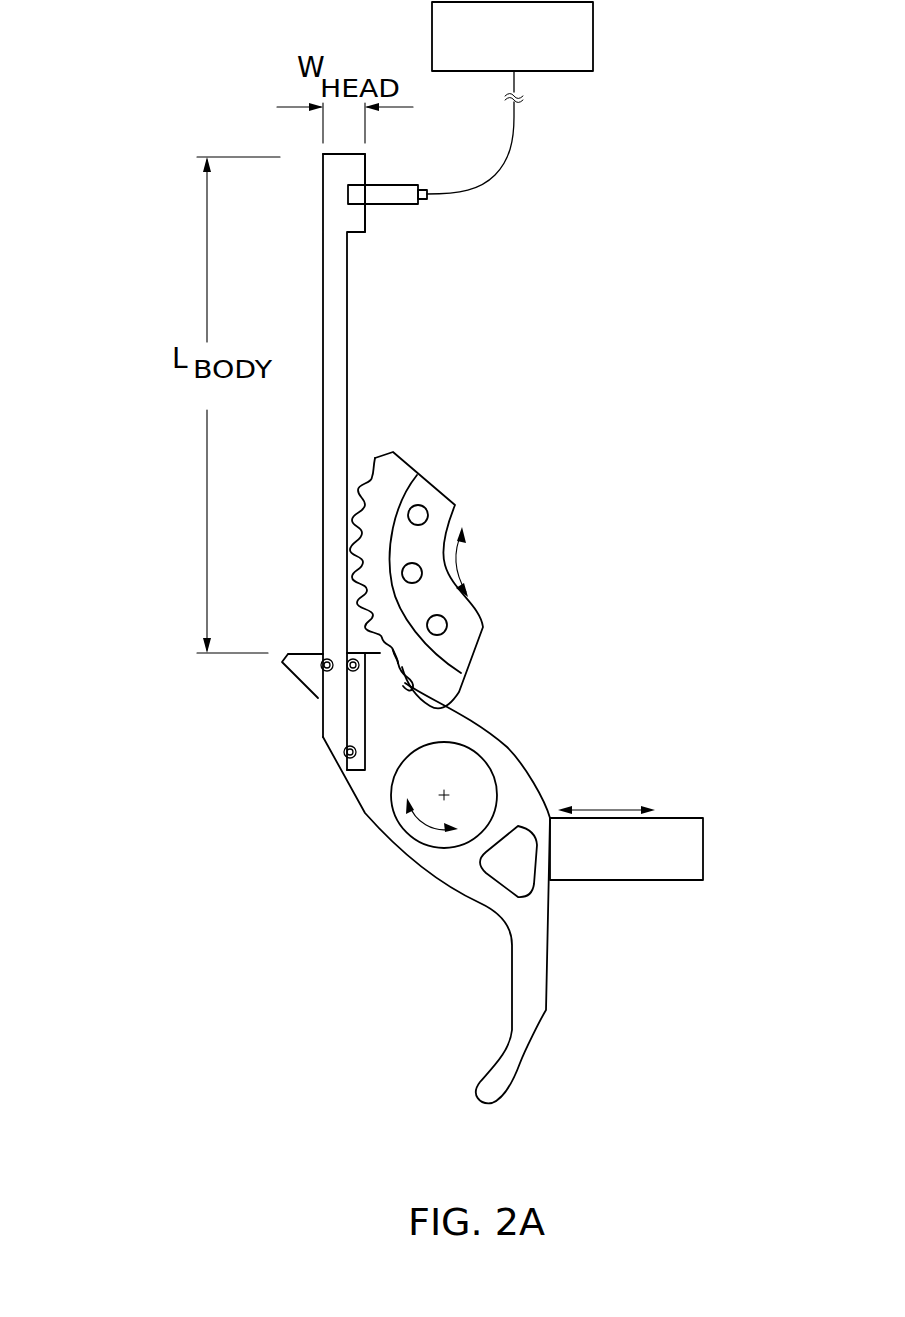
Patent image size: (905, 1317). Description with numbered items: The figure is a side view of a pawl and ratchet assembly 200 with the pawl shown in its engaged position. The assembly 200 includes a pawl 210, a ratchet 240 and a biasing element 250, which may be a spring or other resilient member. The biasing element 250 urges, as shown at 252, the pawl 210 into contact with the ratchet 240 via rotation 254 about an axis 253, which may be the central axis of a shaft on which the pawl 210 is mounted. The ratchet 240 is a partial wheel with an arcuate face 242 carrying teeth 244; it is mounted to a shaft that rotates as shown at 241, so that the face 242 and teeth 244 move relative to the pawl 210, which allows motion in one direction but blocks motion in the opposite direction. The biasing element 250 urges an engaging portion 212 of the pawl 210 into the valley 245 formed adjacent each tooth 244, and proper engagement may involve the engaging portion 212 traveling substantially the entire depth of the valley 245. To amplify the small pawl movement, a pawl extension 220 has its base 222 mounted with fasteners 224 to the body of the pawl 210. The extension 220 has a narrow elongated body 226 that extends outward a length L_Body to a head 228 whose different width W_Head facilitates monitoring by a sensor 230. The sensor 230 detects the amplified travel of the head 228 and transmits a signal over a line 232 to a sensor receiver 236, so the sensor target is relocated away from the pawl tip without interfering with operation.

The pawl and ratchet assembly 200 is at (170, 457).
The pawl 210 is at (550, 728).
The engaging portion 212 is at (398, 662).
The pawl extension 220 is at (350, 462).
The base 222 is at (318, 710).
The fasteners 224 is at (327, 672).
The body 226 is at (323, 447).
The head 228 is at (323, 195).
The sensor 230 is at (390, 204).
The line 232 is at (503, 156).
The sensor receiver 236 is at (432, 22).
The ratchet 240 is at (428, 567).
The rotation 241 is at (482, 562).
The face 242 is at (374, 545).
The teeth 244 is at (398, 663).
The valley 245 is at (407, 687).
The biasing element 250 is at (667, 880).
The urging direction 252 is at (606, 798).
The axis 253 is at (450, 793).
The rotation 254 is at (417, 822).